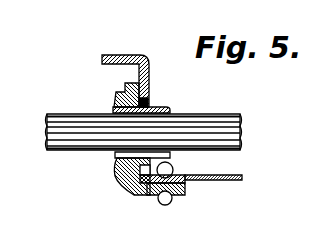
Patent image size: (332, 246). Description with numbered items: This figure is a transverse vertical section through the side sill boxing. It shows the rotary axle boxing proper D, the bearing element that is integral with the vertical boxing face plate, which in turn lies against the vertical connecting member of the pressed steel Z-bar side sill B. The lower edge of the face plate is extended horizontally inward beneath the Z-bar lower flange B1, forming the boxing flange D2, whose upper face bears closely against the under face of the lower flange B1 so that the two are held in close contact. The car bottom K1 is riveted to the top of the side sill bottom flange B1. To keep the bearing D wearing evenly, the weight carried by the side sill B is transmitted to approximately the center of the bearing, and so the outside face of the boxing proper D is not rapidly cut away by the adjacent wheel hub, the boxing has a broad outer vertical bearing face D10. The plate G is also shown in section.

The Z-bar side sill B is at (139, 72).
The Z-bar lower flange B1 is at (187, 181).
The rotary axle boxing proper D is at (165, 107).
The boxing flange D2 is at (153, 200).
The broad outer vertical bearing face D10 is at (116, 162).
The glass plate G is at (65, 137).
The car bottom K1 is at (243, 177).